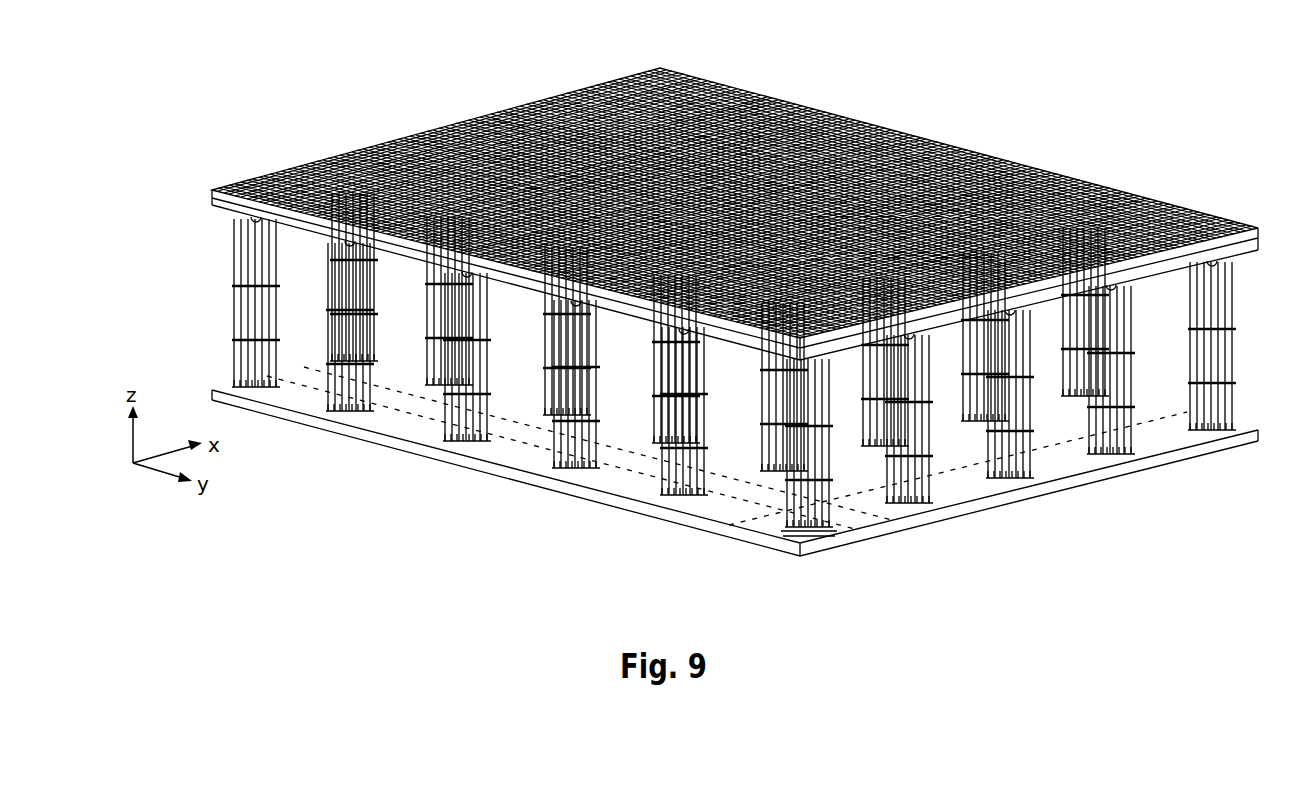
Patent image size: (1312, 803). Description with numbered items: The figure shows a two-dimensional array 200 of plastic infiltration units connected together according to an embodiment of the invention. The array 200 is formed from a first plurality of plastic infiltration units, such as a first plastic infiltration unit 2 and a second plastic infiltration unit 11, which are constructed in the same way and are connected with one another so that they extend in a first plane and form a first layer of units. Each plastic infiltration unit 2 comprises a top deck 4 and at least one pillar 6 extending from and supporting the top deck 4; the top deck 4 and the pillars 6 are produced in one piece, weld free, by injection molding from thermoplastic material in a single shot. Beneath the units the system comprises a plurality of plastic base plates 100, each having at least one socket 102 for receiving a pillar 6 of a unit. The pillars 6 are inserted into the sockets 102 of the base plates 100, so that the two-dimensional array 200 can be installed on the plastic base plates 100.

The first 2 dimensional array 200 is at (1105, 128).
The top deck 4 is at (300, 167).
The plastic infiltration unit 2 is at (1034, 293).
The second plastic infiltration unit 11 is at (1200, 252).
The pillar 6 is at (1232, 339).
The socket 102 is at (818, 543).
The plastic base plate 100 is at (1200, 457).